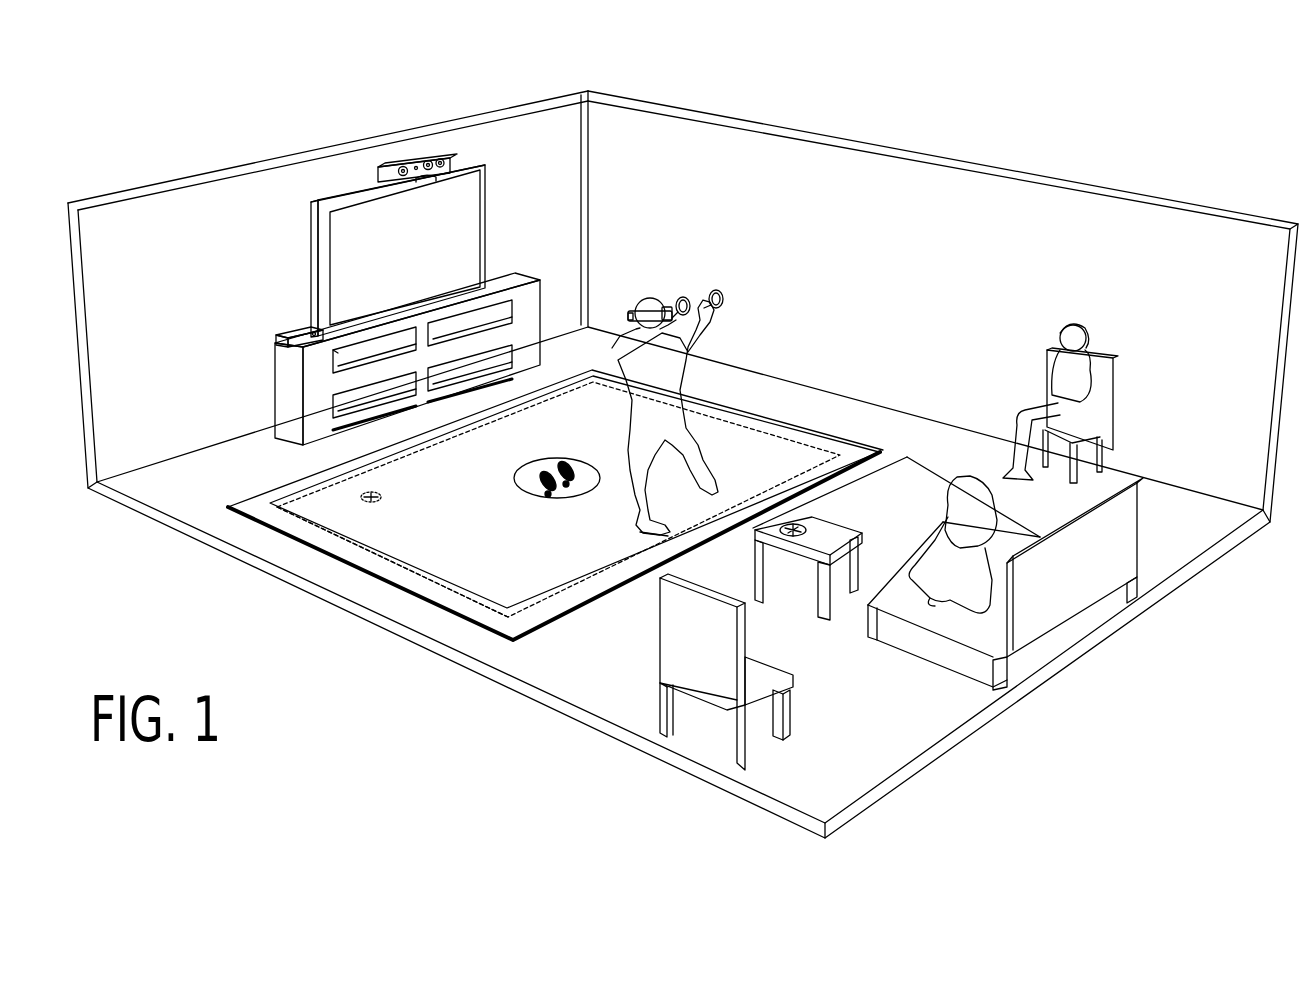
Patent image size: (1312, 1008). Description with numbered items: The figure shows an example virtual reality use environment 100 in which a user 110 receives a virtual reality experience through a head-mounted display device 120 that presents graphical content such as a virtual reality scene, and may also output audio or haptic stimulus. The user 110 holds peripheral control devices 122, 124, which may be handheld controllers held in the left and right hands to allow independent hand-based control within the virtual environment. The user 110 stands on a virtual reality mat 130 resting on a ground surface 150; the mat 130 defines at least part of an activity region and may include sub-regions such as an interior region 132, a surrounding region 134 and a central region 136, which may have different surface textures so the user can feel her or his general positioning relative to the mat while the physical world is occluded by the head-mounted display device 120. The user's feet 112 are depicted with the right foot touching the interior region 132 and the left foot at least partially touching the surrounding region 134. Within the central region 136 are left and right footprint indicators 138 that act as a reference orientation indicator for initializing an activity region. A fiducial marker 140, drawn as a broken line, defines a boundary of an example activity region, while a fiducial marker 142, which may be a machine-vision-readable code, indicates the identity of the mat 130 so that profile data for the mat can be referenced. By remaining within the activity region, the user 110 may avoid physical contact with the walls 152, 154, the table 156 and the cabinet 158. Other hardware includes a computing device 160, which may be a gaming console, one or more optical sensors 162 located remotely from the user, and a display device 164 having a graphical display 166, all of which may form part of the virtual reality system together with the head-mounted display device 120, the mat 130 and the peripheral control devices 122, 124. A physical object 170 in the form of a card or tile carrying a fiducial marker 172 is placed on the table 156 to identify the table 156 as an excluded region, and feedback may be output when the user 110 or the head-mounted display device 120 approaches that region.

The use environment 100 is at (308, 678).
The user 110 is at (668, 377).
The user's feet 112 is at (673, 540).
The head-mounted display (HMD) device 120 is at (663, 300).
The peripheral control device 122 is at (687, 298).
The peripheral control device 124 is at (724, 304).
The virtual reality mat 130 is at (529, 627).
The interior region 132 is at (307, 492).
The surrounding region 134 is at (259, 505).
The central region 136 is at (578, 458).
The footprint indicators 138 is at (564, 496).
The fiducial marker 140 is at (360, 548).
The fiducial marker 142 is at (367, 505).
The ground surface 150 is at (197, 511).
The wall 152 is at (328, 251).
The wall 154 is at (943, 229).
The table 156 is at (918, 470).
The cabinet 158 is at (302, 408).
The computing device 160 is at (300, 330).
The optical sensor 162 is at (460, 152).
The display device 164 is at (434, 251).
The graphical display 166 is at (405, 247).
The physical object 170 is at (791, 540).
The fiducial marker 172 is at (807, 528).